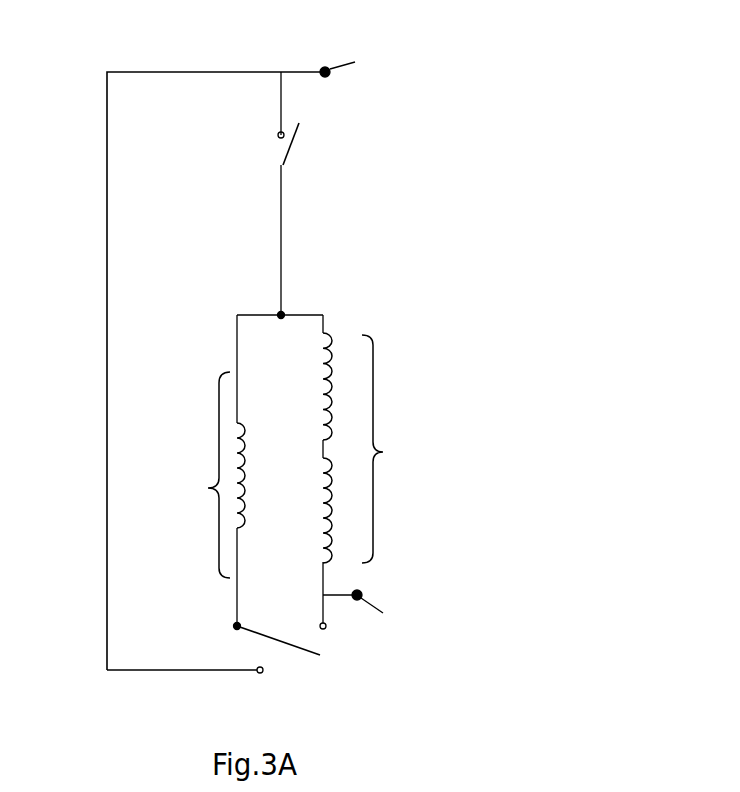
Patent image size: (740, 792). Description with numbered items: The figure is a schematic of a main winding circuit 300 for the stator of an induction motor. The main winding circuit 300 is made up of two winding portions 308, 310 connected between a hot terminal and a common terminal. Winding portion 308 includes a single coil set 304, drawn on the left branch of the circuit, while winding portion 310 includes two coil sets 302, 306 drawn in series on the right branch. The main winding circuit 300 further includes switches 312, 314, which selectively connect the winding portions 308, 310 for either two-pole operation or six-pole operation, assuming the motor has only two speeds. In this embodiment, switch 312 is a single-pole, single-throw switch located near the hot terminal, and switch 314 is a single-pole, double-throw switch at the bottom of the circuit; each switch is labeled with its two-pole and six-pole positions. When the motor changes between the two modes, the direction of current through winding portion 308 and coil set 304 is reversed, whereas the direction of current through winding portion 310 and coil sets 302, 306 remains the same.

The main winding circuit 300 is at (58, 126).
The coil set 302 is at (330, 405).
The coil set 304 is at (241, 473).
The coil set 306 is at (327, 492).
The winding portion 308 is at (201, 475).
The winding portion 310 is at (389, 449).
The switch 312 is at (293, 137).
The switch 314 is at (292, 646).